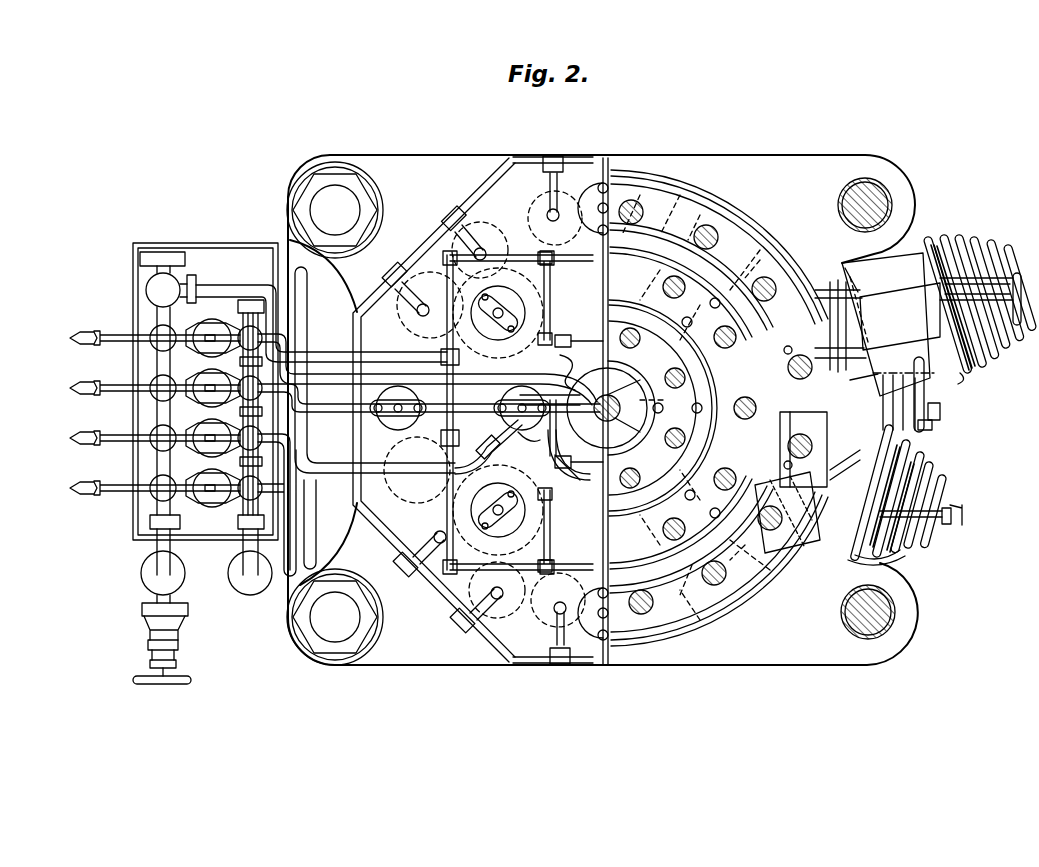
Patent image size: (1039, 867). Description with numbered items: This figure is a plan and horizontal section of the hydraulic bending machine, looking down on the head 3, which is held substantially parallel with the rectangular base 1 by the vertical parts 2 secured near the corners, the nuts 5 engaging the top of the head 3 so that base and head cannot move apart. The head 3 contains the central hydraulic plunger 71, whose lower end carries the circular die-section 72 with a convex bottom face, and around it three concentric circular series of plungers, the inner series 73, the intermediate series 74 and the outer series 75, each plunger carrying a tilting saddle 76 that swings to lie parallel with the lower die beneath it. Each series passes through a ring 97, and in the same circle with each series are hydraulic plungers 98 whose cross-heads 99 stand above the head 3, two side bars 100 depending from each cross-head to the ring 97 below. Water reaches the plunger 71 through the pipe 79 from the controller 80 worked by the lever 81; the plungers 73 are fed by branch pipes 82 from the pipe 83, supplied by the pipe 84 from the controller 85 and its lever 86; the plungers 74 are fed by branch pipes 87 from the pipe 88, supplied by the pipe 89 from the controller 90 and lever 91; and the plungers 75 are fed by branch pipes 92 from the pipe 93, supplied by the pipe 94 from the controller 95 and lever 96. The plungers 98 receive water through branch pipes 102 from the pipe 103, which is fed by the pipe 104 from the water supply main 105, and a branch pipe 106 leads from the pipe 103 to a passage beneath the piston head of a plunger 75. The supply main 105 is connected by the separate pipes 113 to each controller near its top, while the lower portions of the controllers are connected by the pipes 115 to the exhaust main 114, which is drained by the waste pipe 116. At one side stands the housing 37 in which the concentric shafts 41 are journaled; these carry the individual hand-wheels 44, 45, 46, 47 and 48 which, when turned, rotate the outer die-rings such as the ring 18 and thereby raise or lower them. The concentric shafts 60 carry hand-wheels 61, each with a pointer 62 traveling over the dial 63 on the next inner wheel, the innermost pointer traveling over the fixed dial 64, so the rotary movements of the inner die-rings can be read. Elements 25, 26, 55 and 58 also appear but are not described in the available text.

The base 1 is at (603, 410).
The vertical parts 2 is at (848, 622).
The head 3 is at (470, 662).
The nuts 5 is at (308, 198).
The ring 18 is at (758, 592).
The bearing nut 25 is at (951, 413).
The bearing nut 26 is at (933, 426).
The housing 37 is at (891, 324).
The concentric shafts 41 is at (1016, 273).
The hand-wheel 44 is at (929, 238).
The hand-wheel 45 is at (949, 236).
The hand-wheel 46 is at (964, 248).
The hand-wheel 47 is at (977, 237).
The hand-wheel 48 is at (996, 246).
The end plate 55 is at (958, 396).
The spacer 58 is at (933, 399).
The concentric shafts 60 is at (946, 525).
The hand-wheels 61 is at (905, 560).
The pointer 62 is at (930, 470).
The dial 63 is at (805, 532).
The fixed dial 64 is at (843, 469).
The central hydraulic plunger 71 is at (611, 408).
The circular die-section 72 is at (623, 436).
The plungers of the inner series 73 is at (670, 372).
The plungers of the intermediate series 74 is at (672, 288).
The plungers of the outer series 75 is at (706, 224).
The tilting saddle 76 is at (780, 456).
The pipe 79 is at (278, 234).
The controller 80 is at (213, 327).
The lever 81 is at (110, 325).
The branch pipes 82 is at (576, 396).
The pipe 83 is at (573, 478).
The pipe 84 is at (306, 320).
The controller 85 is at (209, 381).
The lever 86 is at (110, 375).
The branch pipes 87 is at (560, 263).
The pipe 88 is at (503, 450).
The pipe 89 is at (350, 452).
The controller 90 is at (209, 429).
The lever 91 is at (110, 428).
The branch pipes 92 is at (545, 200).
The pipe 93 is at (470, 212).
The pipe 94 is at (325, 494).
The controller 95 is at (211, 480).
The lever 96 is at (110, 478).
The ring 97 is at (730, 240).
The hydraulic plungers 98 is at (480, 508).
The cross-heads 99 is at (598, 183).
The side bars 100 is at (606, 185).
The branch pipes 102 is at (580, 247).
The pipe 103 is at (440, 262).
The pipe 104 is at (234, 290).
The water supply main 105 is at (158, 272).
The branch pipe 106 is at (584, 368).
The pipe 113 is at (180, 497).
The exhaust main 114 is at (232, 514).
The pipes 115 is at (236, 407).
The waste pipe 116 is at (253, 571).